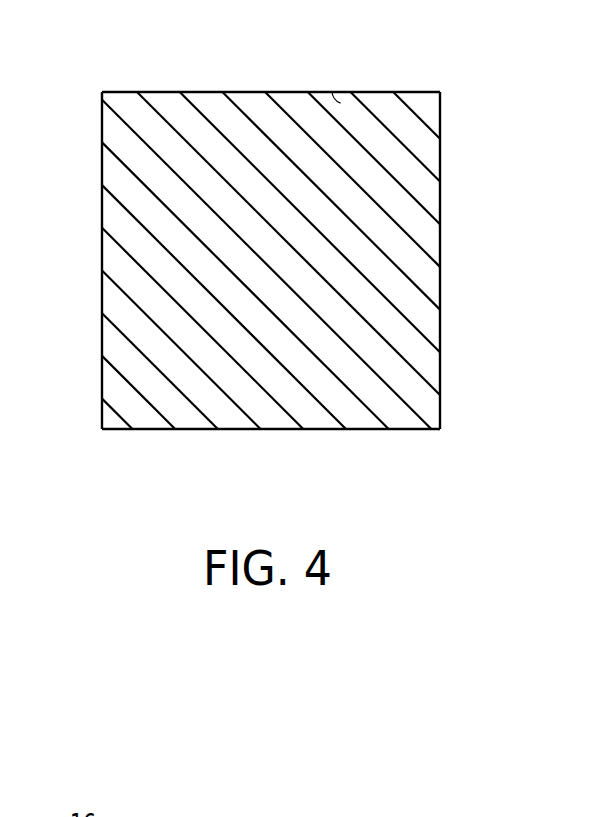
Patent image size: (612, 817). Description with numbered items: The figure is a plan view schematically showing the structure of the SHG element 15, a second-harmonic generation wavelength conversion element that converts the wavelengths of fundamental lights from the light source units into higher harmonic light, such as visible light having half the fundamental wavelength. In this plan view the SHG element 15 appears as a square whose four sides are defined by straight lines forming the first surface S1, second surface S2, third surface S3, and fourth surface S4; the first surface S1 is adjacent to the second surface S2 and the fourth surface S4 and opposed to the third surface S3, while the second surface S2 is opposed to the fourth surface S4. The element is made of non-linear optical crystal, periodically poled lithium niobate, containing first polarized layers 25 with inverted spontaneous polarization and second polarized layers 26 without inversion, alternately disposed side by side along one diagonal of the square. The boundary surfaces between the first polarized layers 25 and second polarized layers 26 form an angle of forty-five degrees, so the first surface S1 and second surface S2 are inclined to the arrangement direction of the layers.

The SHG element 15 is at (266, 248).
The first polarized layers 25 is at (435, 150).
The second polarized layers 26 is at (435, 193).
The first surface S1 is at (248, 92).
The second surface S2 is at (100, 278).
The third surface S3 is at (282, 429).
The fourth surface S4 is at (440, 277).